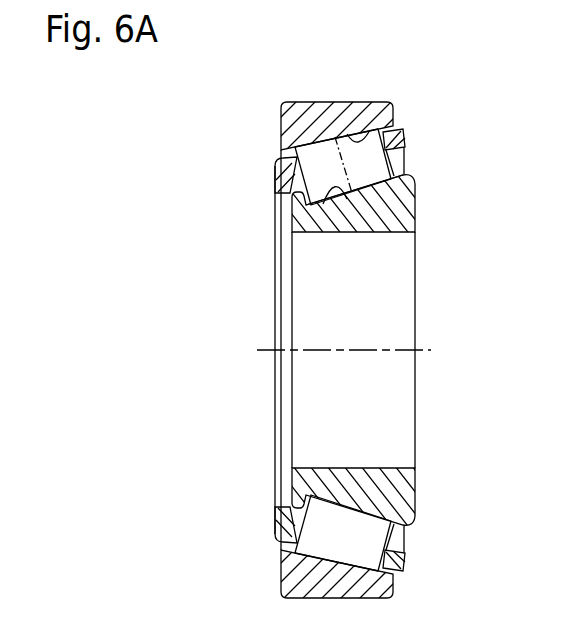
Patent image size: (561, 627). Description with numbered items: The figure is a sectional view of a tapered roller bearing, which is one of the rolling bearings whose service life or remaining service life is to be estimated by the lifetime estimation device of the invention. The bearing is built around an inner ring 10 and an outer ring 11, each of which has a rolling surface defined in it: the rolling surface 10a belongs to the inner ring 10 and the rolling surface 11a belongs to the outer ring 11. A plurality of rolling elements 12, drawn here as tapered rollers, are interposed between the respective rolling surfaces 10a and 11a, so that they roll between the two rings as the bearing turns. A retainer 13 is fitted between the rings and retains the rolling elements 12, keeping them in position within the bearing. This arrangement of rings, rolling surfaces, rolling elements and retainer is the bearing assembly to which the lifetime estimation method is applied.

The inner ring 10 is at (388, 213).
The rolling surface 10a is at (352, 200).
The outer ring 11 is at (315, 112).
The rolling surface 11a is at (377, 123).
The rolling elements 12 is at (345, 533).
The retainer 13 is at (392, 137).